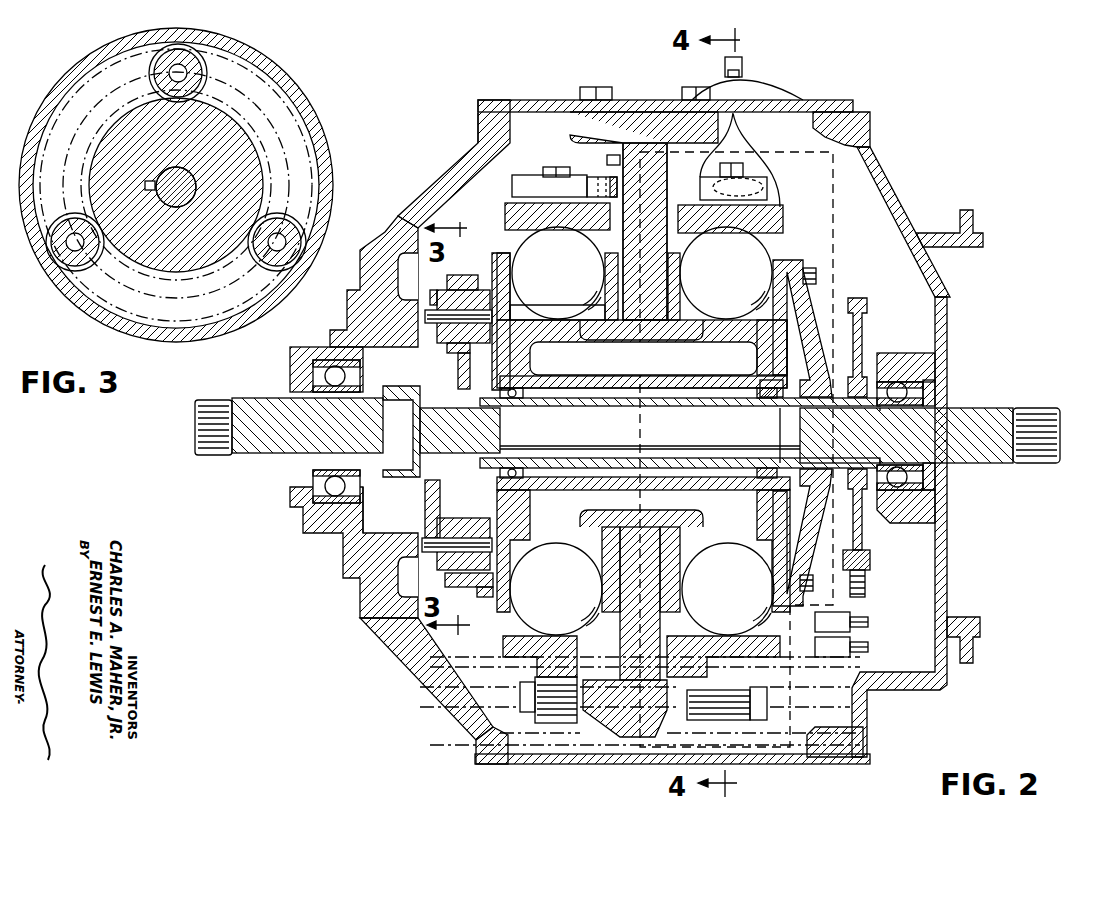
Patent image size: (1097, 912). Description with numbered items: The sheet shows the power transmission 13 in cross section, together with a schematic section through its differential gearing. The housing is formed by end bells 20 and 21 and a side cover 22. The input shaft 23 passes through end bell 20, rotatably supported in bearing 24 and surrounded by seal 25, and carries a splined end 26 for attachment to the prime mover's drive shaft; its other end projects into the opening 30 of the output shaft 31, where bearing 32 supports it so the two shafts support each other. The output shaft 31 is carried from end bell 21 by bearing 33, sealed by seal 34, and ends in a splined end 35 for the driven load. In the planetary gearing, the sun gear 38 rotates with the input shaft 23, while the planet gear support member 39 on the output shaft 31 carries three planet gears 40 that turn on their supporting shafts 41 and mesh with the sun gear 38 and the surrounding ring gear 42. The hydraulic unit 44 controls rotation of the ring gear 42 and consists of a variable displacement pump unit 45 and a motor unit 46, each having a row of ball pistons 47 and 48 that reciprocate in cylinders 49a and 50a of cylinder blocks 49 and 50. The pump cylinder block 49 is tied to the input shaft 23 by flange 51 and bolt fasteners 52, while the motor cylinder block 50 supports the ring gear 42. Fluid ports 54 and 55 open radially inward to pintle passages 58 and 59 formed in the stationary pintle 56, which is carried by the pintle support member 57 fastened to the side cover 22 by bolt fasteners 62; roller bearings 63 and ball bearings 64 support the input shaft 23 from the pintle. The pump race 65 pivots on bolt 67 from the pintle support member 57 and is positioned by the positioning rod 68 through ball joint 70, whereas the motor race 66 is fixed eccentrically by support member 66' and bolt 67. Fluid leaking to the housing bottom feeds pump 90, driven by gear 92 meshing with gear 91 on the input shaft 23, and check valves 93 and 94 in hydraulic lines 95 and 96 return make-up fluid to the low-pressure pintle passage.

In FIG. 2, the power transmission 13 is at (884, 163).
In FIG. 2, the end bell 20 is at (983, 235).
In FIG. 2, the end bell 21 is at (412, 206).
In FIG. 2, the side cover 22 is at (531, 99).
In FIG. 3, the input shaft 23 is at (182, 187).
In FIG. 2, the input shaft 23 is at (960, 409).
In FIG. 2, the bearing 24 is at (897, 500).
In FIG. 2, the seal 25 is at (947, 478).
In FIG. 2, the splined end 26 is at (1038, 408).
In FIG. 2, the opening 30 is at (400, 384).
In FIG. 2, the output shaft 31 is at (288, 398).
In FIG. 2, the bearing 32 is at (418, 490).
In FIG. 2, the bearing 33 is at (326, 484).
In FIG. 2, the seal 34 is at (291, 378).
In FIG. 2, the splined end 35 is at (195, 427).
In FIG. 3, the sun gear 38 is at (248, 178).
In FIG. 2, the sun gear 38 is at (471, 368).
In FIG. 2, the planet gear support member 39 is at (425, 518).
In FIG. 3, the planet gears 40 is at (302, 251).
In FIG. 2, the planet gears 40 is at (425, 317).
In FIG. 3, the supporting shafts 41 is at (276, 254).
In FIG. 2, the supporting shafts 41 is at (450, 545).
In FIG. 3, the ring gear 42 is at (302, 103).
In FIG. 2, the ring gear 42 is at (460, 276).
In FIG. 2, the hydraulic unit 44 is at (797, 218).
In FIG. 2, the variable displacement pump unit 45 is at (845, 240).
In FIG. 2, the motor unit 46 is at (487, 183).
In FIG. 2, the ball pistons 47 is at (740, 284).
In FIG. 2, the ball pistons 48 is at (566, 284).
In FIG. 2, the pump cylinder block 49 is at (802, 253).
In FIG. 2, the cylinders 49a is at (755, 358).
In FIG. 2, the motor cylinder block 50 is at (497, 252).
In FIG. 2, the cylinders 50a is at (557, 323).
In FIG. 2, the flange 51 is at (803, 322).
In FIG. 2, the bolt fasteners 52 is at (818, 277).
In FIG. 2, the fluid ports 54 is at (707, 341).
In FIG. 2, the fluid ports 55 is at (538, 341).
In FIG. 2, the pintle 56 is at (680, 433).
In FIG. 2, the pintle support member 57 is at (578, 126).
In FIG. 2, the pintle passage 58 is at (627, 417).
In FIG. 2, the pintle passage 59 is at (637, 489).
In FIG. 2, the bolt fasteners 62 is at (683, 88).
In FIG. 2, the roller bearings 63 is at (776, 399).
In FIG. 2, the ball bearings 64 is at (507, 389).
In FIG. 2, the pump race 65 is at (783, 213).
In FIG. 2, the motor race 66 is at (549, 177).
In FIG. 2, the support member 66' is at (593, 170).
In FIG. 2, the bolt 67 is at (527, 697).
In FIG. 2, the positioning rod 68 is at (708, 185).
In FIG. 2, the ball joint 70 is at (760, 171).
In FIG. 2, the pump 90 is at (912, 594).
In FIG. 2, the gear 91 is at (864, 331).
In FIG. 2, the gear 92 is at (860, 577).
In FIG. 2, the check valve 93 is at (850, 618).
In FIG. 2, the check valve 94 is at (850, 652).
In FIG. 2, the hydraulic line 95 is at (795, 565).
In FIG. 2, the hydraulic line 96 is at (637, 746).